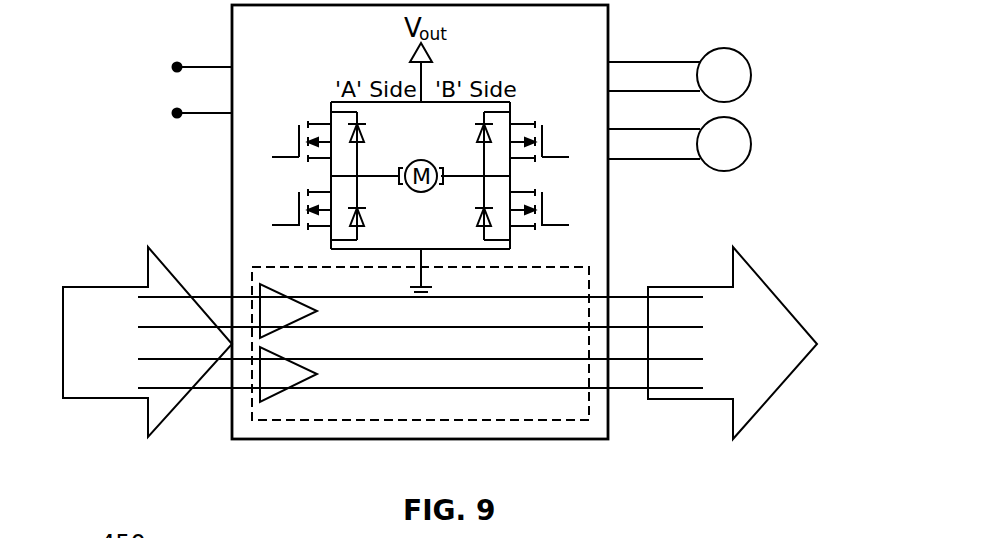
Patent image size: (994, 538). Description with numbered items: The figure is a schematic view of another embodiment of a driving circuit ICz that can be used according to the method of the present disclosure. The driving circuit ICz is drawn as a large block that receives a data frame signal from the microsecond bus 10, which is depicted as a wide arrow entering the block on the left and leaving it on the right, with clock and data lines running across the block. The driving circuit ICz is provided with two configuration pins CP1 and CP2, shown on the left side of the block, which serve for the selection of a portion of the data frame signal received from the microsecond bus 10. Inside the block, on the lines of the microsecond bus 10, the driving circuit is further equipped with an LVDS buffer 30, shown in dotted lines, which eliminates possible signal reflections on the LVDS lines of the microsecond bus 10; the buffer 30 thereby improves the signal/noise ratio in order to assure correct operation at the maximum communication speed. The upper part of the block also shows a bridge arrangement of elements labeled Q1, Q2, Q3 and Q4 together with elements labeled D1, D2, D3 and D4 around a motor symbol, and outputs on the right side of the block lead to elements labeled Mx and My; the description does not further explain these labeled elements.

The microsecond bus 10 is at (100, 399).
The LVDS buffer 30 is at (300, 427).
The driving circuit ICz is at (469, 440).
The configuration pin CP1 is at (173, 71).
The configuration pin CP2 is at (173, 117).
The motor x Mx is at (679, 75).
The motor y My is at (679, 144).
The transistor Q1 is at (301, 127).
The transistor Q2 is at (301, 225).
The transistor Q3 is at (545, 136).
The transistor Q4 is at (545, 223).
The diode D1 is at (369, 144).
The diode D2 is at (369, 208).
The diode D3 is at (478, 144).
The diode D4 is at (476, 208).